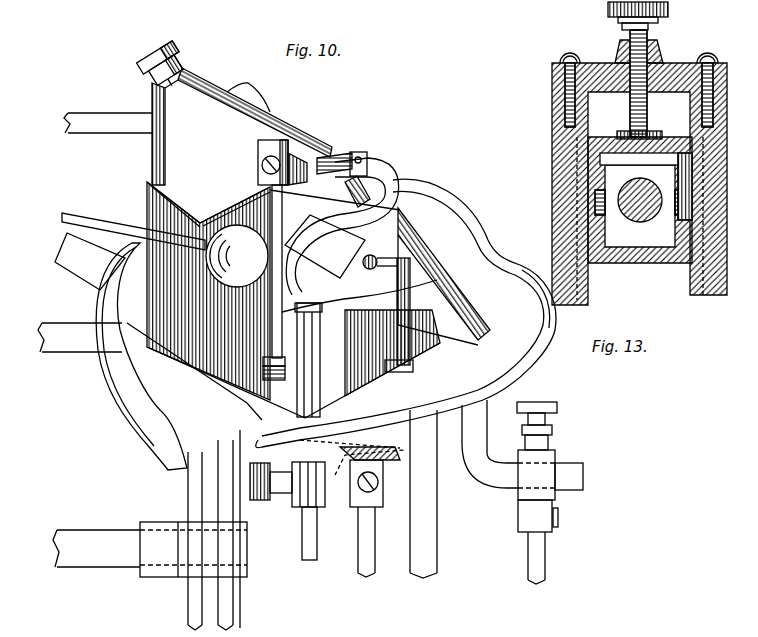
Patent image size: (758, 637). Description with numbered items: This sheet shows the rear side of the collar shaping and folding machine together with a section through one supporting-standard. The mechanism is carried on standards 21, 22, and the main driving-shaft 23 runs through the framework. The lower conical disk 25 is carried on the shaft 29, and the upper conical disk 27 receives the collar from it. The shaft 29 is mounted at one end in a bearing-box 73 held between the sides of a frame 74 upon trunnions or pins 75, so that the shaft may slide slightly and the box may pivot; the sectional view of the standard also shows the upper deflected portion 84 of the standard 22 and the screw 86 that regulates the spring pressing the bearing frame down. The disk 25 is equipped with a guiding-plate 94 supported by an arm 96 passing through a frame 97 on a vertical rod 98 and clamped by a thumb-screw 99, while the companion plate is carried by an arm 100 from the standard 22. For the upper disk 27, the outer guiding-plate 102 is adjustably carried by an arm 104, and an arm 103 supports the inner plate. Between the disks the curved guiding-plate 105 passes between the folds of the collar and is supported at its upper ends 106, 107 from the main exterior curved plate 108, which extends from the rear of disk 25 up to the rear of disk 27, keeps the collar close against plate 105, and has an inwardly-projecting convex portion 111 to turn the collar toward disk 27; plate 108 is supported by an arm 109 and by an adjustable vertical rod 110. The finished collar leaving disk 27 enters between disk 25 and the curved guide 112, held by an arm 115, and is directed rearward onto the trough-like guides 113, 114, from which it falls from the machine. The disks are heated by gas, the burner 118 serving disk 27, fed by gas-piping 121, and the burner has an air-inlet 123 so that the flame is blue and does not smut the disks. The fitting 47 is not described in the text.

In FIG. 13, the standard 21 is at (552, 208).
In FIG. 10, the supporting-standard 22 is at (178, 490).
In FIG. 10, the main driving-shaft 23 is at (95, 542).
In FIG. 10, the conical disk 25 is at (438, 290).
In FIG. 10, the upper conical disk 27 is at (293, 243).
In FIG. 10, the shaft 29 is at (40, 336).
In FIG. 13, the shaft 29 is at (628, 263).
In FIG. 10, the pipe fitting 47 is at (140, 60).
In FIG. 13, the bearing-box 73 is at (657, 277).
In FIG. 13, the frame 74 is at (570, 160).
In FIG. 13, the trunnions or pins 75 is at (577, 180).
In FIG. 10, the upper deflected portion of standard 84 is at (325, 246).
In FIG. 10, the screw 86 is at (350, 192).
In FIG. 10, the guiding-plate 94 is at (432, 422).
In FIG. 10, the arm 96 is at (484, 473).
In FIG. 10, the frame 97 is at (556, 452).
In FIG. 10, the vertical rod 98 is at (549, 558).
In FIG. 10, the thumb-screw 99 is at (540, 395).
In FIG. 10, the arm 100 is at (375, 256).
In FIG. 10, the outer guiding-plate 102 is at (272, 100).
In FIG. 10, the arm 103 is at (281, 217).
In FIG. 10, the arm 104 is at (80, 133).
In FIG. 10, the guiding-plate 105 is at (342, 505).
In FIG. 10, the upper end of guiding-plate 106 is at (378, 315).
In FIG. 10, the upper end of guiding-plate 107 is at (248, 191).
In FIG. 10, the main exterior curved plate 108 is at (338, 372).
In FIG. 10, the arm 109 is at (66, 214).
In FIG. 10, the vertical rod 110 is at (305, 560).
In FIG. 10, the inwardly-projecting convex portion 111 is at (237, 256).
In FIG. 10, the guide 112 is at (456, 259).
In FIG. 10, the trough-like guide 113 is at (372, 403).
In FIG. 10, the trough-like guide 114 is at (179, 356).
In FIG. 10, the arm 115 is at (517, 316).
In FIG. 10, the gas-burner 118 is at (335, 155).
In FIG. 10, the gas-piping 121 is at (342, 226).
In FIG. 10, the air-inlet 123 is at (364, 158).